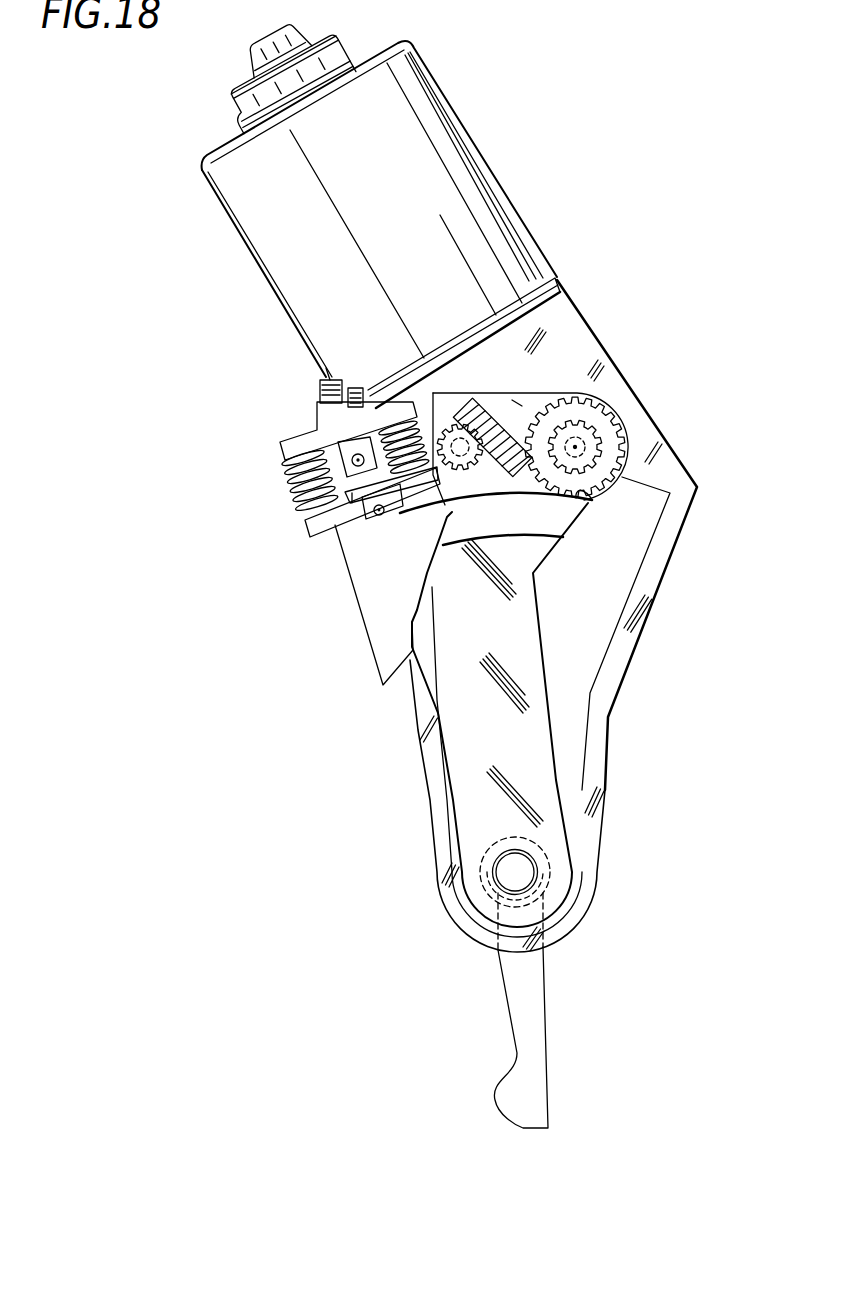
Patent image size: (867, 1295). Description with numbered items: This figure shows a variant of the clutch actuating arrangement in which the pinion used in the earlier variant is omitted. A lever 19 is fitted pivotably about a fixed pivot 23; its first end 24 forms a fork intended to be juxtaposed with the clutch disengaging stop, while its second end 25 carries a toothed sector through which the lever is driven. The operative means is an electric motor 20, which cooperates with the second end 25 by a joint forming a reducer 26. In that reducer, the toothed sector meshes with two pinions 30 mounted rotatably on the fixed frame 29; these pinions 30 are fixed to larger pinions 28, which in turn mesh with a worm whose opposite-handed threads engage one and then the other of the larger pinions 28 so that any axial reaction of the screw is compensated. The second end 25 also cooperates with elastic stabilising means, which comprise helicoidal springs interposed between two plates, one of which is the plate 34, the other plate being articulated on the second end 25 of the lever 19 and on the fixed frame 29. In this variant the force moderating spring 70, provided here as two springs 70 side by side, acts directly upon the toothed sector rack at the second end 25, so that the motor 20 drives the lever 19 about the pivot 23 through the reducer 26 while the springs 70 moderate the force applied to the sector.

The lever 19 is at (548, 822).
The electric motor 20 is at (457, 150).
The fixed pivot 23 is at (527, 877).
The first end 24 is at (500, 1100).
The second end 25 is at (580, 493).
The reducer 26 is at (527, 412).
The larger pinions 28 is at (490, 407).
The fixed frame 29 is at (687, 467).
The pinions 30 is at (455, 410).
The plate 34 is at (521, 407).
The force moderating spring 70 is at (302, 495).